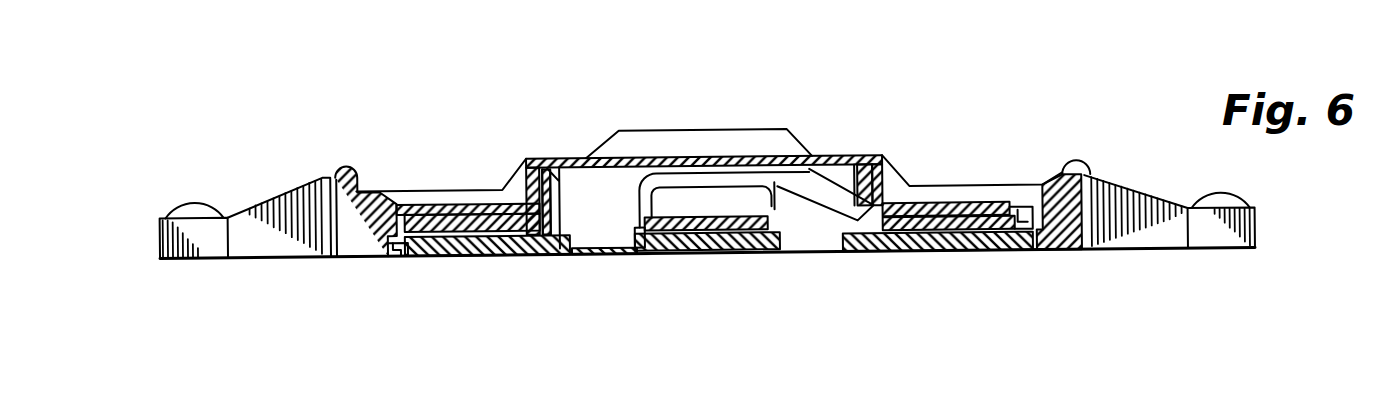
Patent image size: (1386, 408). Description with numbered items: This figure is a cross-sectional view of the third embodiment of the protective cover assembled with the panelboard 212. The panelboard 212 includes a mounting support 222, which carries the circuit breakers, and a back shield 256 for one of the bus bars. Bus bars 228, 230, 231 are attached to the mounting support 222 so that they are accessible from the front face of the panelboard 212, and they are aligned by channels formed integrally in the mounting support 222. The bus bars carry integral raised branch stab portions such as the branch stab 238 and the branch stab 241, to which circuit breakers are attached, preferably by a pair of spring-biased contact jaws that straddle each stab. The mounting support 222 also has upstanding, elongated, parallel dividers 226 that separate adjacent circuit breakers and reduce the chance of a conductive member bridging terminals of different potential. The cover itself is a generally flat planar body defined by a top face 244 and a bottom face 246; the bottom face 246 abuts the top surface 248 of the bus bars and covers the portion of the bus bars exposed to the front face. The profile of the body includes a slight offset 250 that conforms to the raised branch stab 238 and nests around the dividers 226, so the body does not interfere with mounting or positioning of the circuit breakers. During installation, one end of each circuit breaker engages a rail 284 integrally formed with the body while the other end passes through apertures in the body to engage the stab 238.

The panelboard 212 is at (1133, 212).
The mounting support 222 is at (400, 247).
The dividers 226 is at (607, 189).
The bus bar 228 is at (445, 219).
The bus bar 230 is at (950, 236).
The bus bar 231 is at (668, 248).
The branch stab 238 is at (805, 184).
The branch stab 241 is at (775, 209).
The top face 244 is at (475, 201).
The bottom face 246 is at (492, 236).
The top surface of the bus bars 248 is at (430, 200).
The offset 250 is at (843, 158).
The back shield 256 is at (745, 248).
The rail 284 is at (1080, 166).